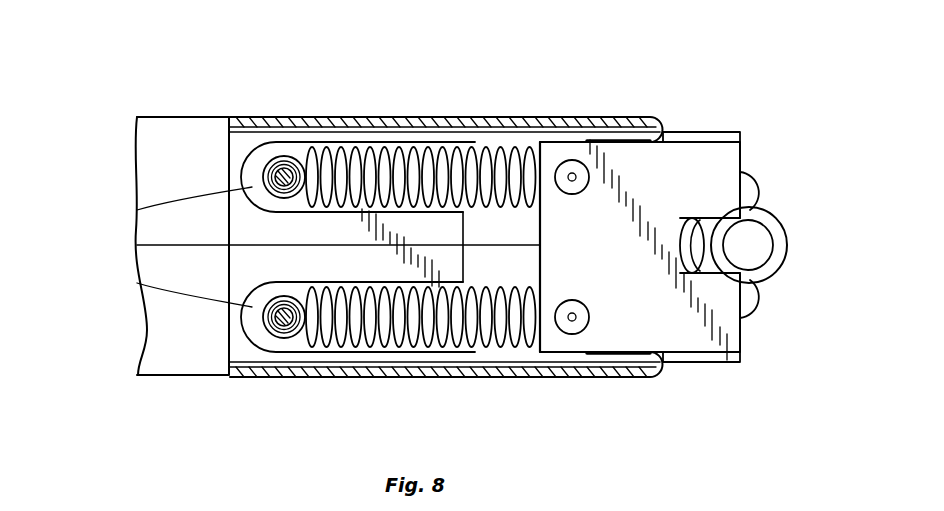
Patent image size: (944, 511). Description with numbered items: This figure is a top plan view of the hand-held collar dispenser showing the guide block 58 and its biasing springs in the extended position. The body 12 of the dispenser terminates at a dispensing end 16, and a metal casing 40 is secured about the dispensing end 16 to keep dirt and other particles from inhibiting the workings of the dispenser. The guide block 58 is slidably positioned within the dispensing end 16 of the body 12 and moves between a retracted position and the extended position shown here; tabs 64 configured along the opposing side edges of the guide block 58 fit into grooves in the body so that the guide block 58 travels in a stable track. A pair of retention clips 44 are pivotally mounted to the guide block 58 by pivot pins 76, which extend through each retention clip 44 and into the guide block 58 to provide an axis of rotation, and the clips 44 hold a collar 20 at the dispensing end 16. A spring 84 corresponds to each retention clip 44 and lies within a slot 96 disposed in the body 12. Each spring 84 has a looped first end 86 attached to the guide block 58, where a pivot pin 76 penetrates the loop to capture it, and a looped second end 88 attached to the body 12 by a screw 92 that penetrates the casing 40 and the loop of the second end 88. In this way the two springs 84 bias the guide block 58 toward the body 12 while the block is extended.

The body 12 is at (131, 370).
The dispensing end 16 is at (622, 362).
The collar 20 is at (787, 252).
The casing 40 is at (437, 118).
The retention clip 44 is at (758, 193).
The guide block 58 is at (712, 165).
The tab 64 is at (712, 132).
The pivot pin 76 is at (573, 162).
The spring 84 is at (402, 152).
The first end 86 is at (537, 165).
The second end 88 is at (285, 150).
The screw 92 is at (252, 172).
The slot 96 is at (137, 283).